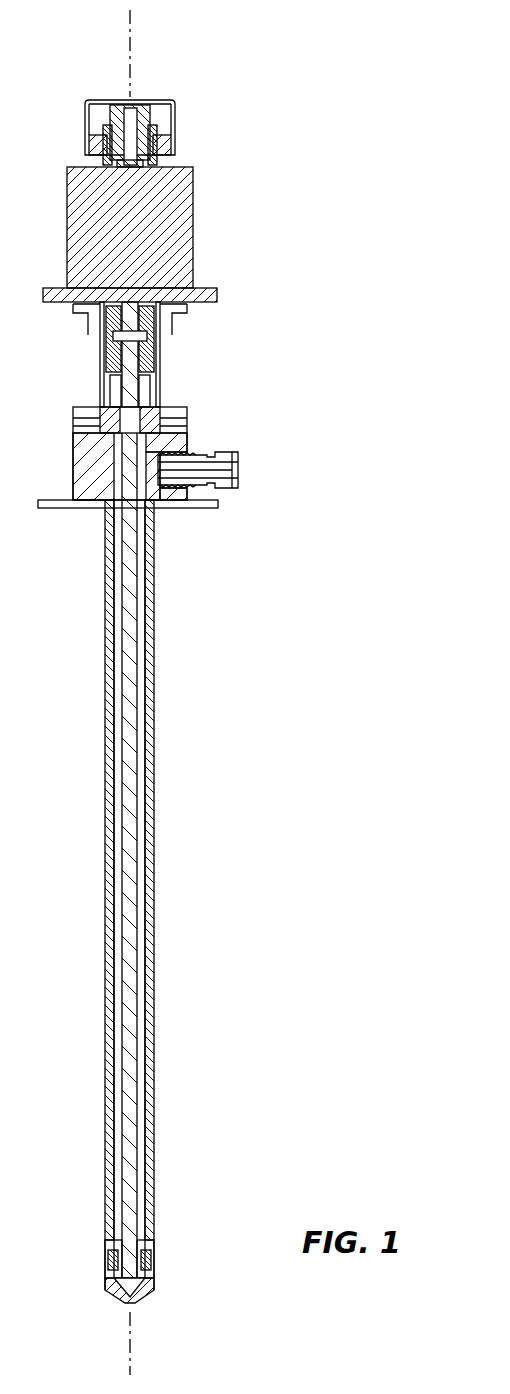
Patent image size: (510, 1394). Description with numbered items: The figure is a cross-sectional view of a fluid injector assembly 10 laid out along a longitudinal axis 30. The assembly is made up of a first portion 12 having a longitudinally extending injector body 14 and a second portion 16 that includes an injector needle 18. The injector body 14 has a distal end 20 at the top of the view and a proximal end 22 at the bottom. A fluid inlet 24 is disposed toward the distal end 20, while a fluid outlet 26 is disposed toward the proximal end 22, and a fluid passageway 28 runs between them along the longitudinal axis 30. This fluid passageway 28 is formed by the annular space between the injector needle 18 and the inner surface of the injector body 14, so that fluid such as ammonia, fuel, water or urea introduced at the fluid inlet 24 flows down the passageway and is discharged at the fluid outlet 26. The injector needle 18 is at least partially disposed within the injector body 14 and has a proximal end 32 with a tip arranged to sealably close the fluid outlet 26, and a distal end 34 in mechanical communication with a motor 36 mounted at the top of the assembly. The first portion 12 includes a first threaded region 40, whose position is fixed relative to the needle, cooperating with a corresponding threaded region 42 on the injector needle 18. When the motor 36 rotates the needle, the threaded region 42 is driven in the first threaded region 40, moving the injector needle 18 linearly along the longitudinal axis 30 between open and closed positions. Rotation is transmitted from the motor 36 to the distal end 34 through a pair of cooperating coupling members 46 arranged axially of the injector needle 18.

The fluid injector assembly 10 is at (333, 300).
The first portion 12 is at (154, 632).
The injector body 14 is at (105, 608).
The second portion 16 is at (140, 813).
The injector needle 18 is at (133, 947).
The distal end 20 is at (158, 517).
The proximal end 22 is at (152, 1298).
The fluid inlet 24 is at (142, 485).
The fluid outlet 26 is at (128, 1300).
The fluid passageway 28 is at (140, 708).
The longitudinal axis 30 is at (132, 83).
The proximal end 32 is at (140, 1287).
The distal end 34 is at (130, 358).
The motor 36 is at (193, 212).
The first threaded region 40 is at (160, 391).
The threaded region 42 is at (102, 397).
The pair of cooperating coupling members 46 is at (92, 318).